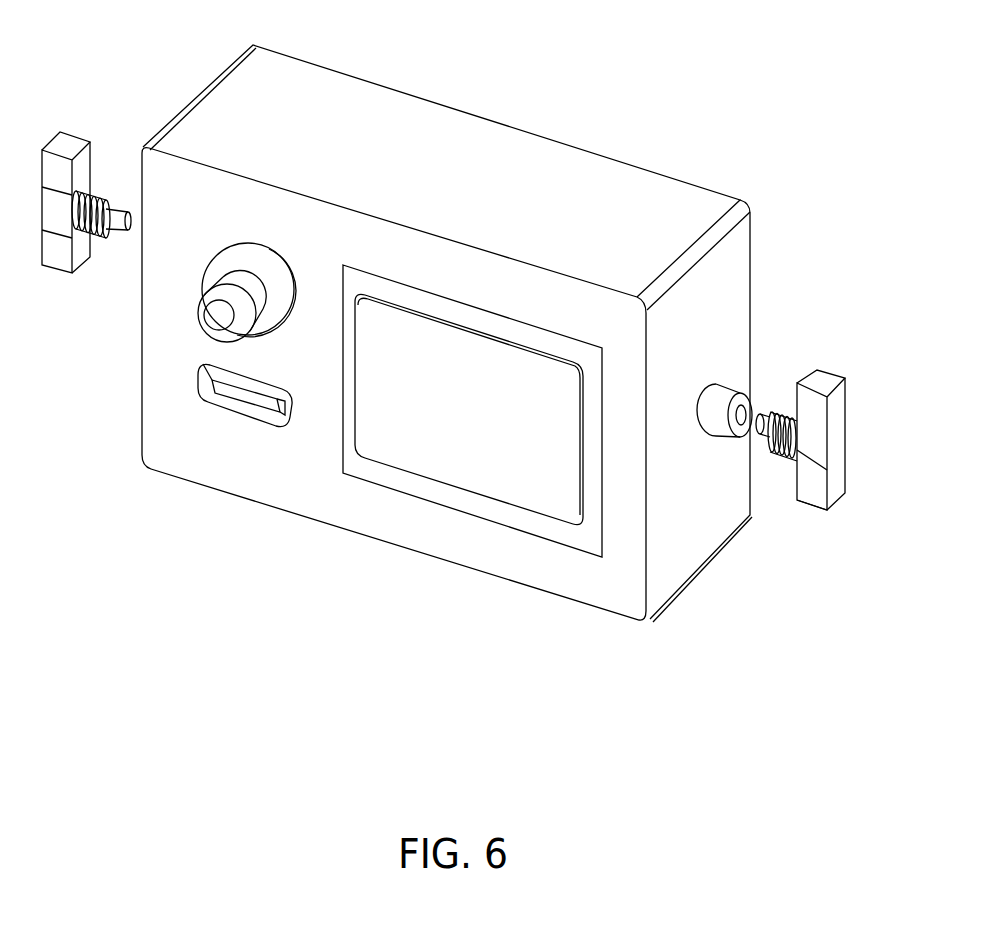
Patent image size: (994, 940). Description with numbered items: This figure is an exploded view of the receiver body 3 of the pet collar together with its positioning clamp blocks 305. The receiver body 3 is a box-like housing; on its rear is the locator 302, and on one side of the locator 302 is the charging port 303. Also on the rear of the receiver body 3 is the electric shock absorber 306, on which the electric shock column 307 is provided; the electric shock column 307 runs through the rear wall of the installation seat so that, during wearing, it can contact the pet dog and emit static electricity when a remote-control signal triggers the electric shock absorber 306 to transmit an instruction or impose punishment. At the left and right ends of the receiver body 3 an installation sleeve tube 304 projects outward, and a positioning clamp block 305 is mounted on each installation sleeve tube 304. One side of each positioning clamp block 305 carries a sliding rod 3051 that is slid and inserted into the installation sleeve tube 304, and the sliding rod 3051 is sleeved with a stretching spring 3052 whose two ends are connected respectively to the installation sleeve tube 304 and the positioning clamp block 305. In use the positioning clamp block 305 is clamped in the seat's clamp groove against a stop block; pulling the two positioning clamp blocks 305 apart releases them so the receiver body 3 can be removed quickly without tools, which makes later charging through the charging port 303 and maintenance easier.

The receiver body 3 is at (578, 208).
The locator 302 is at (478, 477).
The charging port 303 is at (240, 403).
The installation sleeve tube 304 is at (745, 393).
The positioning clamp block 305 is at (859, 453).
The sliding rod 3051 is at (800, 425).
The stretching spring 3052 is at (817, 477).
The electric shock absorber 306 is at (267, 272).
The electric shock column 307 is at (220, 317).